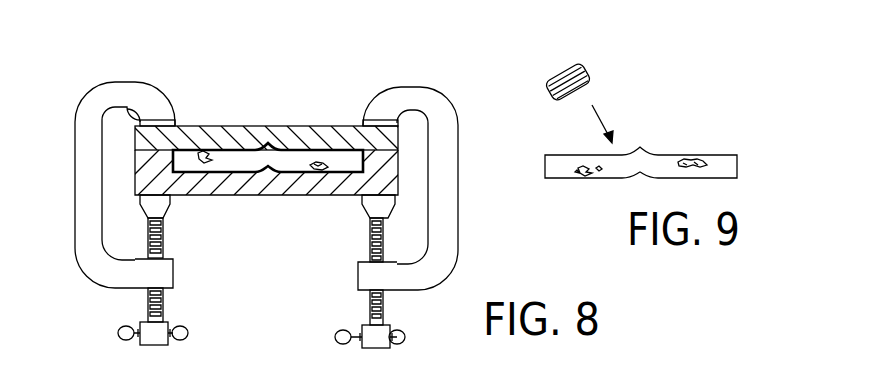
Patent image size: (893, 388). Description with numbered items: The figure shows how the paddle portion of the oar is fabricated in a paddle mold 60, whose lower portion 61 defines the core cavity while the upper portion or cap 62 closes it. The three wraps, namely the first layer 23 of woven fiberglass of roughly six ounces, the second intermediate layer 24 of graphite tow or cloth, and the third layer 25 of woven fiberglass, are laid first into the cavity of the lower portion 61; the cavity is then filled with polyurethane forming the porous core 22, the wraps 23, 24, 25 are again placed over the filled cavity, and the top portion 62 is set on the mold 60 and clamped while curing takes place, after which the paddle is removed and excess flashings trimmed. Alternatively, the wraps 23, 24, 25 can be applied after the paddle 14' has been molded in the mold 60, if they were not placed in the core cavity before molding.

In FIG. 9, the paddle 14' is at (659, 144).
In FIG. 8, the polyurethane porous core 22 is at (311, 161).
In FIG. 8, the first layer 23 is at (311, 161).
In FIG. 9, the first layer 23 is at (631, 110).
In FIG. 8, the second intermediate layer 24 is at (311, 161).
In FIG. 9, the second intermediate layer 24 is at (631, 110).
In FIG. 8, the third layer 25 is at (440, 82).
In FIG. 9, the third layer 25 is at (586, 66).
In FIG. 8, the paddle mold 60 is at (310, 161).
In FIG. 8, the lower portion 61 is at (222, 190).
In FIG. 8, the upper portion or cap 62 is at (254, 135).